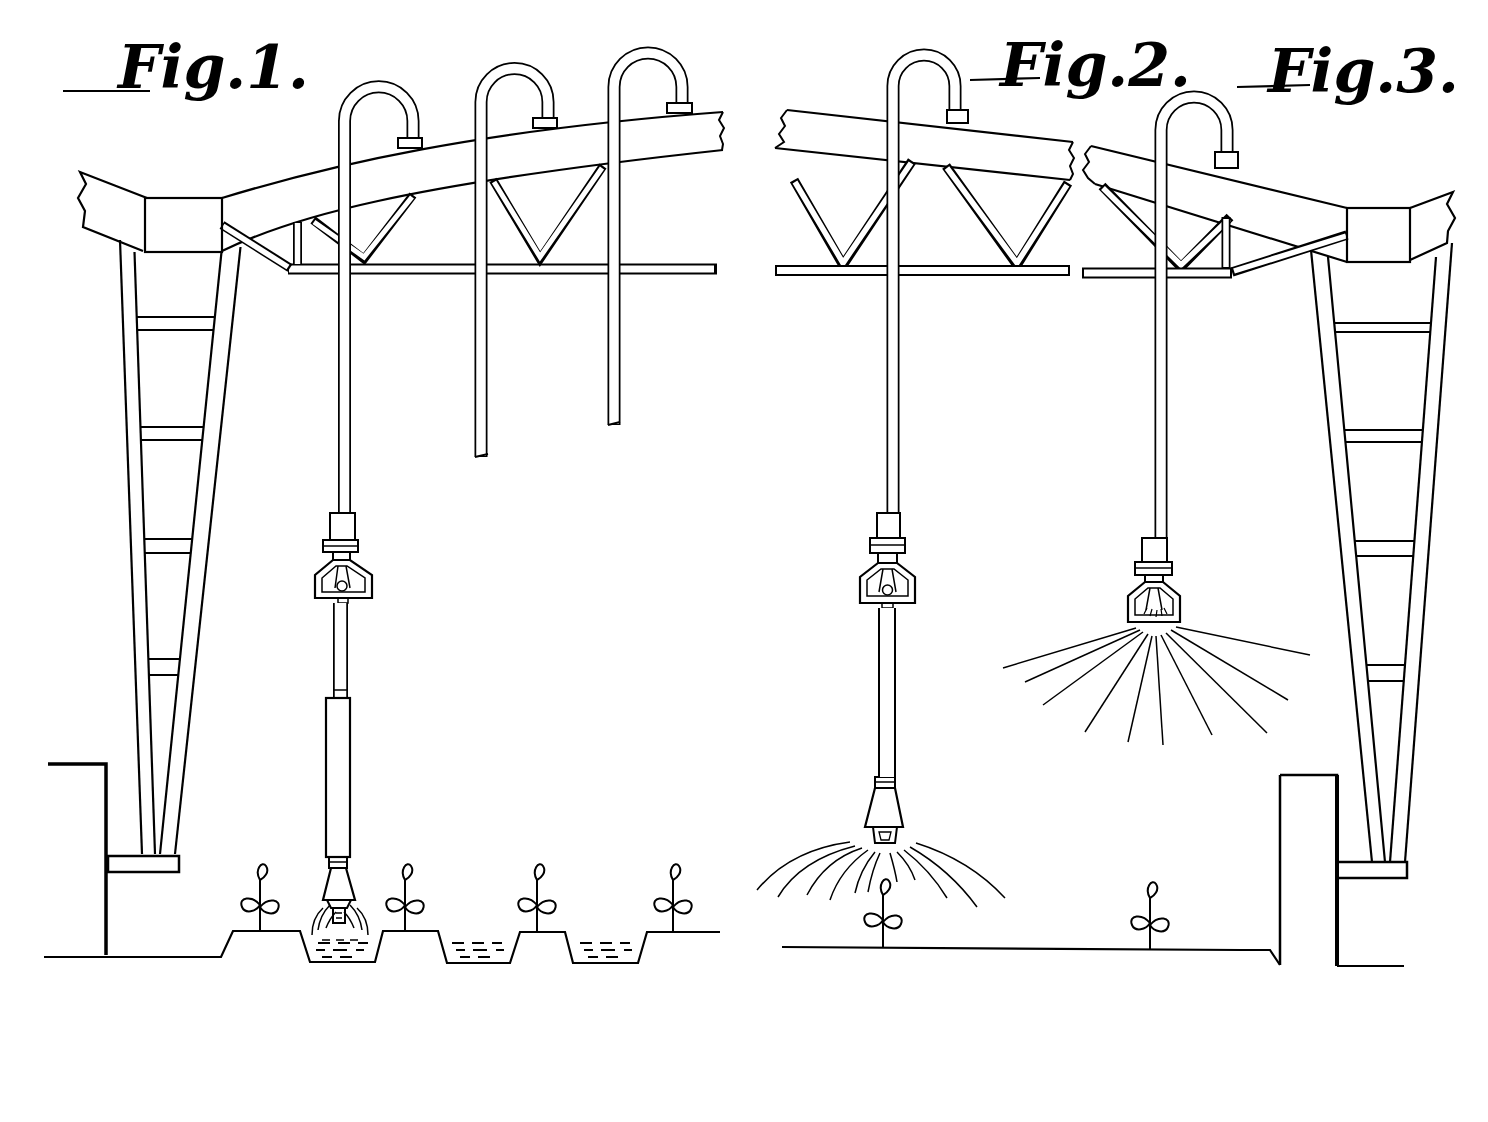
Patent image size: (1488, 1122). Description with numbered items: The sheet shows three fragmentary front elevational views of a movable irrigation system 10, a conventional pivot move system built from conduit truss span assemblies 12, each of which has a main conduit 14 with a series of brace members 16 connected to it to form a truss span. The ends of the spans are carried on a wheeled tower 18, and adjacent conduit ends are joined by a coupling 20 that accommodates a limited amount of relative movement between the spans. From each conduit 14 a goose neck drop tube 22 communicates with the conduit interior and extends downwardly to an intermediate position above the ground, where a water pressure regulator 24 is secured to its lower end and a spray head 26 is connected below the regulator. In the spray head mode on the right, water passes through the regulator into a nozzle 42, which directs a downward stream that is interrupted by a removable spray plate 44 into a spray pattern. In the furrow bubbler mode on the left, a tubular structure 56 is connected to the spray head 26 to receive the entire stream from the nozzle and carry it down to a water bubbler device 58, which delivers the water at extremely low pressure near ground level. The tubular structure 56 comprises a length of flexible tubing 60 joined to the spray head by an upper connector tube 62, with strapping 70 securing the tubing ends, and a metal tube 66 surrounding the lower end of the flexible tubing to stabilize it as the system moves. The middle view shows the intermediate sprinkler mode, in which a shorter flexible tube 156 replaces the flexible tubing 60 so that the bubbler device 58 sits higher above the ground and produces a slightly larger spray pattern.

In FIG. 3, the movable irrigation system 10 is at (1289, 176).
In FIG. 1, the conduit truss span assembly 12 is at (296, 176).
In FIG. 1, the main conduit 14 is at (717, 120).
In FIG. 2, the main conduit 14 is at (813, 122).
In FIG. 3, the main conduit 14 is at (1122, 160).
In FIG. 1, the brace members 16 is at (392, 232).
In FIG. 2, the brace members 16 is at (1110, 277).
In FIG. 3, the brace members 16 is at (1214, 229).
In FIG. 1, the wheeled tower 18 is at (224, 448).
In FIG. 3, the wheeled tower 18 is at (1336, 482).
In FIG. 1, the coupling 20 is at (180, 212).
In FIG. 3, the coupling 20 is at (1392, 180).
In FIG. 1, the goose neck drop tube 22 is at (351, 393).
In FIG. 2, the goose neck drop tube 22 is at (899, 418).
In FIG. 3, the goose neck drop tube 22 is at (1167, 390).
In FIG. 1, the water pressure regulator 24 is at (358, 537).
In FIG. 2, the water pressure regulator 24 is at (907, 532).
In FIG. 3, the water pressure regulator 24 is at (1170, 565).
In FIG. 1, the spray head 26 is at (313, 567).
In FIG. 2, the spray head 26 is at (918, 577).
In FIG. 3, the spray head 26 is at (1183, 596).
In FIG. 3, the nozzle 42 is at (1133, 602).
In FIG. 3, the removable spray plate 44 is at (1128, 612).
In FIG. 1, the tubular structure 56 is at (352, 684).
In FIG. 1, the water bubbler device 58 is at (357, 877).
In FIG. 2, the water bubbler device 58 is at (902, 807).
In FIG. 1, the flexible tubing 60 is at (333, 652).
In FIG. 1, the upper connector tube 62 is at (354, 585).
In FIG. 2, the upper connector tube 62 is at (857, 583).
In FIG. 1, the metal tube 66 is at (342, 792).
In FIG. 1, the strapping 70 is at (348, 604).
In FIG. 2, the strapping 70 is at (895, 606).
In FIG. 2, the flexible tube 156 is at (895, 727).